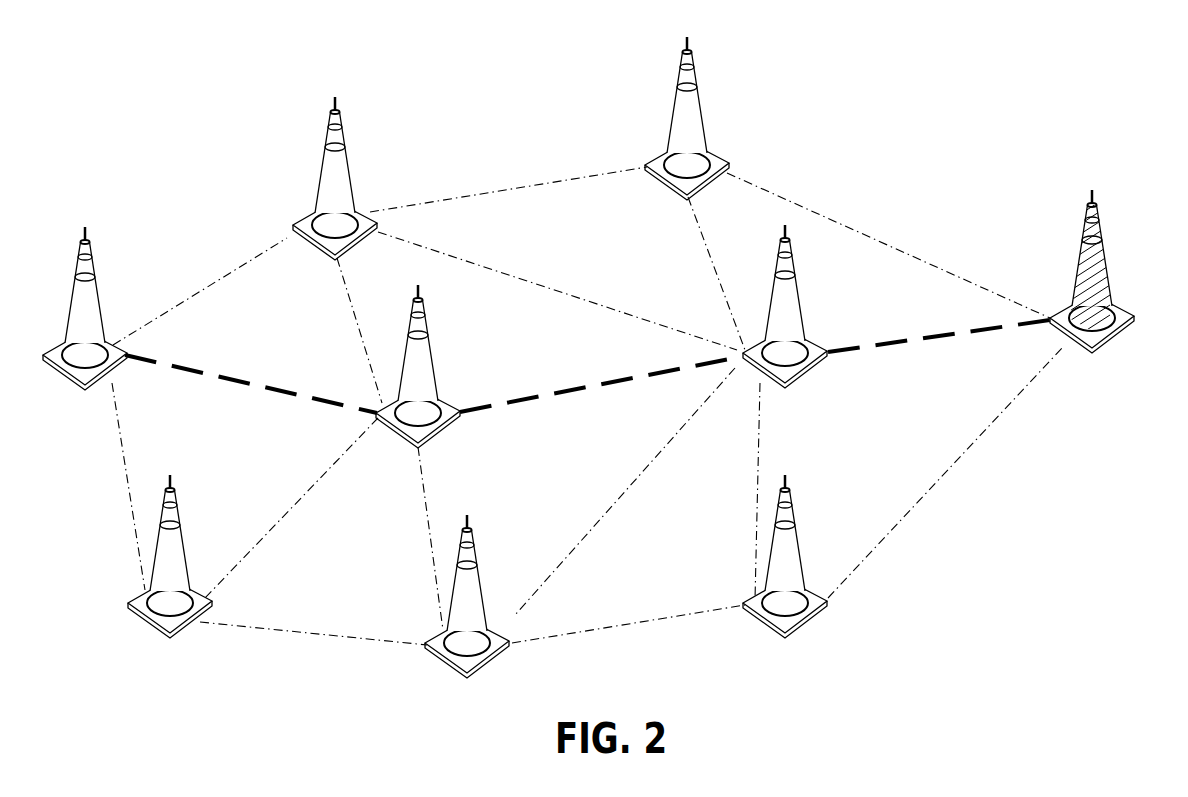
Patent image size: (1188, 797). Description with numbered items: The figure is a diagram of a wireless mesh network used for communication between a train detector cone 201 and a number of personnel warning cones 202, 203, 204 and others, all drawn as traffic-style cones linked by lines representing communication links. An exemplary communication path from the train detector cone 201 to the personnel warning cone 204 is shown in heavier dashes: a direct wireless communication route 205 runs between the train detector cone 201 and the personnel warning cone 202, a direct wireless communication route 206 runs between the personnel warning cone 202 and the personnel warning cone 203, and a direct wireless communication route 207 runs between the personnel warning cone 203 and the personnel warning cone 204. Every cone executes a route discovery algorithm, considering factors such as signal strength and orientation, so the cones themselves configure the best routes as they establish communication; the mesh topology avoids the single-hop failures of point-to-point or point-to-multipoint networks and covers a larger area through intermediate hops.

The train detector cone 201 is at (1087, 255).
The personnel warning cone 202 is at (802, 297).
The personnel warning cone 203 is at (432, 352).
The personnel warning cone 204 is at (100, 308).
The direct wireless communication route 205 is at (930, 339).
The direct wireless communication route 206 is at (617, 383).
The direct wireless communication route 207 is at (237, 382).